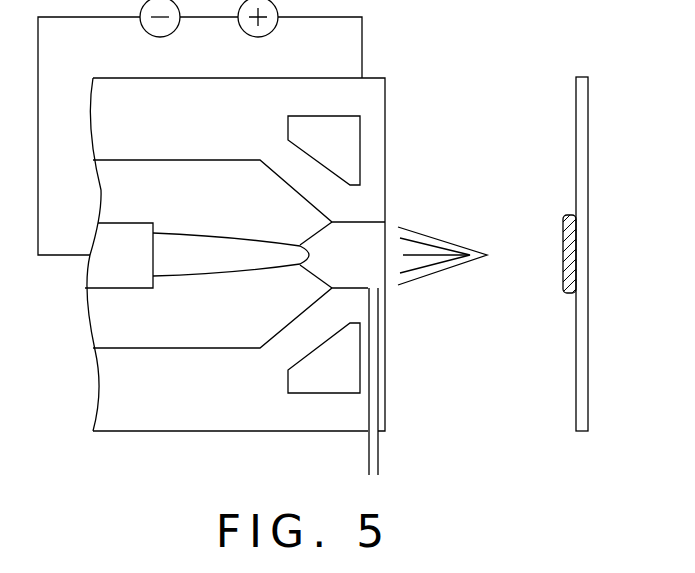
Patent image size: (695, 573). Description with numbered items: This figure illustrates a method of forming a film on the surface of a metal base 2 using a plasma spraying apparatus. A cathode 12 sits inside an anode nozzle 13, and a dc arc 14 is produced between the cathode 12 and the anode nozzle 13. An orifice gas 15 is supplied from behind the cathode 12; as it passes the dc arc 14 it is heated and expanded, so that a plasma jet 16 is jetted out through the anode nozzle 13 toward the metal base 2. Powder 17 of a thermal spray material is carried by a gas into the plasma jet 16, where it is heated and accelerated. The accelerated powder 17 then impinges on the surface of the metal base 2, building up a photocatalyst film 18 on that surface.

The metal base 2 is at (578, 416).
The cathode 12 is at (170, 232).
The anode nozzle 13 is at (322, 206).
The dc arc 14 is at (329, 255).
The orifice gas 15 is at (100, 321).
The plasma jet 16 is at (452, 240).
The powder of thermal spray material 17 is at (372, 476).
The photocatalyst film 18 is at (563, 240).